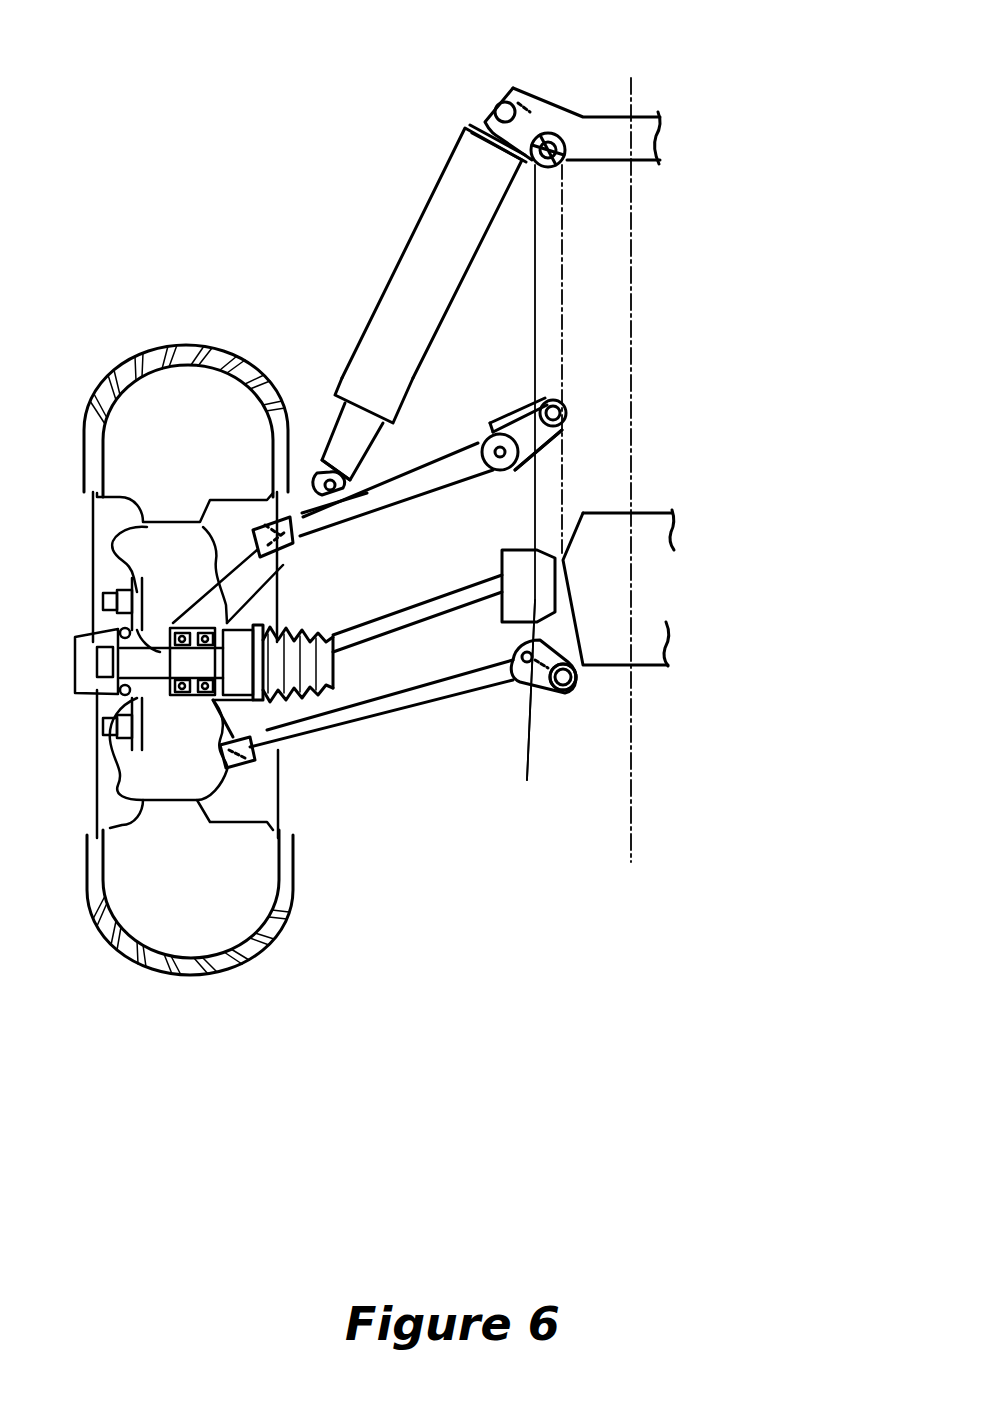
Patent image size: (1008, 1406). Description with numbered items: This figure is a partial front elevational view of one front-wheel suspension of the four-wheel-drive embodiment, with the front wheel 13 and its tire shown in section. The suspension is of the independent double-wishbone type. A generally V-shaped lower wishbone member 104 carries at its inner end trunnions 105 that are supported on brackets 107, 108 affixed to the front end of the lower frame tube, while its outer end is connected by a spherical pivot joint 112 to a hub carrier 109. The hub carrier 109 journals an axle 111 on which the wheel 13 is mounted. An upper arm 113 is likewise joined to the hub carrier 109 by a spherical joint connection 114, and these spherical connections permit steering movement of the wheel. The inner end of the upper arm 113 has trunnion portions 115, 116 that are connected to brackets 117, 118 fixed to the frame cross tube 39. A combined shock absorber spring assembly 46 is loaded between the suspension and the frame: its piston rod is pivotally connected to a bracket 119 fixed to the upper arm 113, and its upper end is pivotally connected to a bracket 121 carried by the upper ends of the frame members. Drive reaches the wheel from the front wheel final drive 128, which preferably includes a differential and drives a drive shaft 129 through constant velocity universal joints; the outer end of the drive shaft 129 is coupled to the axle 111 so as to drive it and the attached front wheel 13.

The front wheel 13 is at (153, 345).
The combined shock absorber spring assembly 46 is at (395, 255).
The bracket 121 is at (548, 110).
The hub carrier 109 is at (205, 600).
The axle 111 is at (145, 667).
The upper arm 113 is at (427, 483).
The spherical joint connection 114 is at (305, 533).
The trunnion portion 115 is at (498, 428).
The trunnion portion 116 is at (545, 398).
The reinforcing tube 39 is at (556, 400).
The bracket 117 is at (535, 430).
The bracket 118 is at (558, 434).
The bracket 119 is at (355, 490).
The drive shaft 129 is at (412, 603).
The front wheel final drive 128 is at (610, 660).
The lower wishbone member 104 is at (400, 713).
The pivot joint 112 is at (230, 773).
The bracket 107 is at (567, 697).
The bracket 108 is at (563, 677).
The trunnion 105 is at (527, 780).